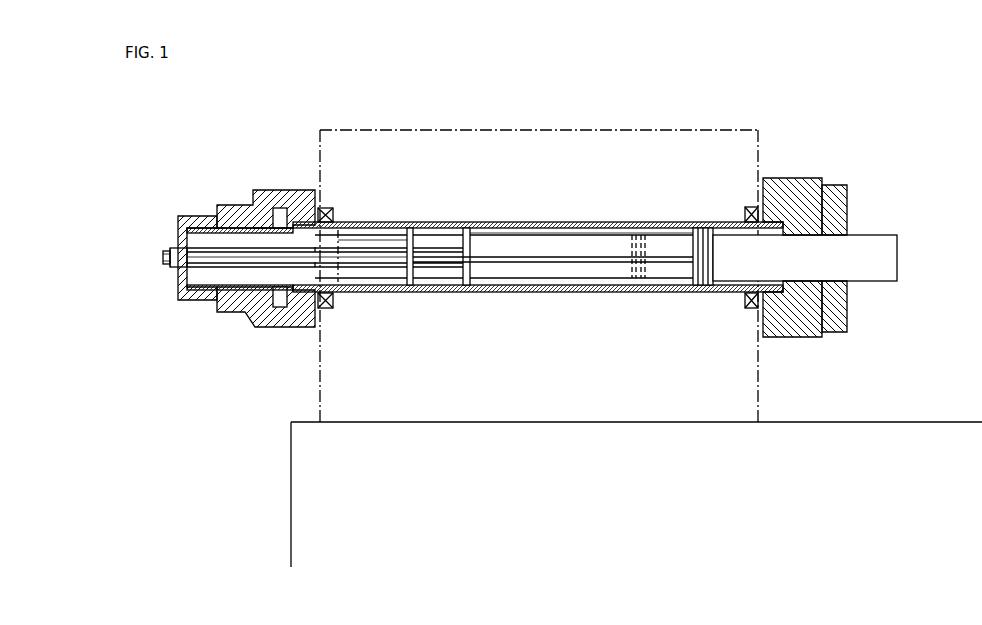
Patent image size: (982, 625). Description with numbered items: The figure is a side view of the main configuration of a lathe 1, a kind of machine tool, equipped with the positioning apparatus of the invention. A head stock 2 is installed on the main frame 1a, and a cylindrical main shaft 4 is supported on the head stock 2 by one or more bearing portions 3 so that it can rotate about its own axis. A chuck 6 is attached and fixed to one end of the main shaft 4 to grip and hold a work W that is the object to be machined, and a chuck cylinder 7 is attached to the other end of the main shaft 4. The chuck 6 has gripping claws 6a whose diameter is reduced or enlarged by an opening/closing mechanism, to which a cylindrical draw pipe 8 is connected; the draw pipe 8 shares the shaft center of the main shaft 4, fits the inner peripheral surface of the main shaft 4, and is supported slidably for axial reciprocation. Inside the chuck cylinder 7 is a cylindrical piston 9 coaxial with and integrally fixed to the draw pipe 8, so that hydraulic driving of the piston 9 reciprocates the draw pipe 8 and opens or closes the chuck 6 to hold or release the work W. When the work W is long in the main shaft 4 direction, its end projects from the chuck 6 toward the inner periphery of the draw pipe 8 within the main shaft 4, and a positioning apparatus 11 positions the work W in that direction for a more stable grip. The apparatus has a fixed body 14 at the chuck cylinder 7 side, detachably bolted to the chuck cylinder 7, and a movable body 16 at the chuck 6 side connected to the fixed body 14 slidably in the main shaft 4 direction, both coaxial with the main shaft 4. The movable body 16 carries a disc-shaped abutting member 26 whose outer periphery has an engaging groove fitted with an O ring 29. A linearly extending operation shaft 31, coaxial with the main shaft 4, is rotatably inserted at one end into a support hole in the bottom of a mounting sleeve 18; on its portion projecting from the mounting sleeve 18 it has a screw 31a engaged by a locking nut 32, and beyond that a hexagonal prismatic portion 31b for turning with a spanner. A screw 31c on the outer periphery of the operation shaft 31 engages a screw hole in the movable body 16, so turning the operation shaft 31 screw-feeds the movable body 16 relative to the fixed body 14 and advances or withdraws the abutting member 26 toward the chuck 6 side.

The lathe 1 is at (797, 121).
The main frame 1a is at (813, 421).
The head stock 2 is at (693, 130).
The bearing portion 3 is at (327, 207).
The main shaft 4 is at (663, 222).
The chuck 6 is at (792, 180).
The gripping claw 6a is at (835, 186).
The chuck cylinder 7 is at (278, 190).
The draw pipe 8 is at (497, 233).
The piston 9 is at (262, 238).
The positioning apparatus 11 is at (508, 266).
The fixed body 14 is at (360, 243).
The movable body 16 is at (547, 242).
The mounting sleeve 18 is at (200, 215).
The abutting member 26 is at (643, 272).
The O ring 29 is at (702, 290).
The operation shaft 31 is at (385, 265).
The screw 31a is at (172, 270).
The prismatic portion 31b is at (166, 267).
The screw 31c is at (372, 267).
The locking nut 32 is at (170, 250).
The work W is at (870, 235).